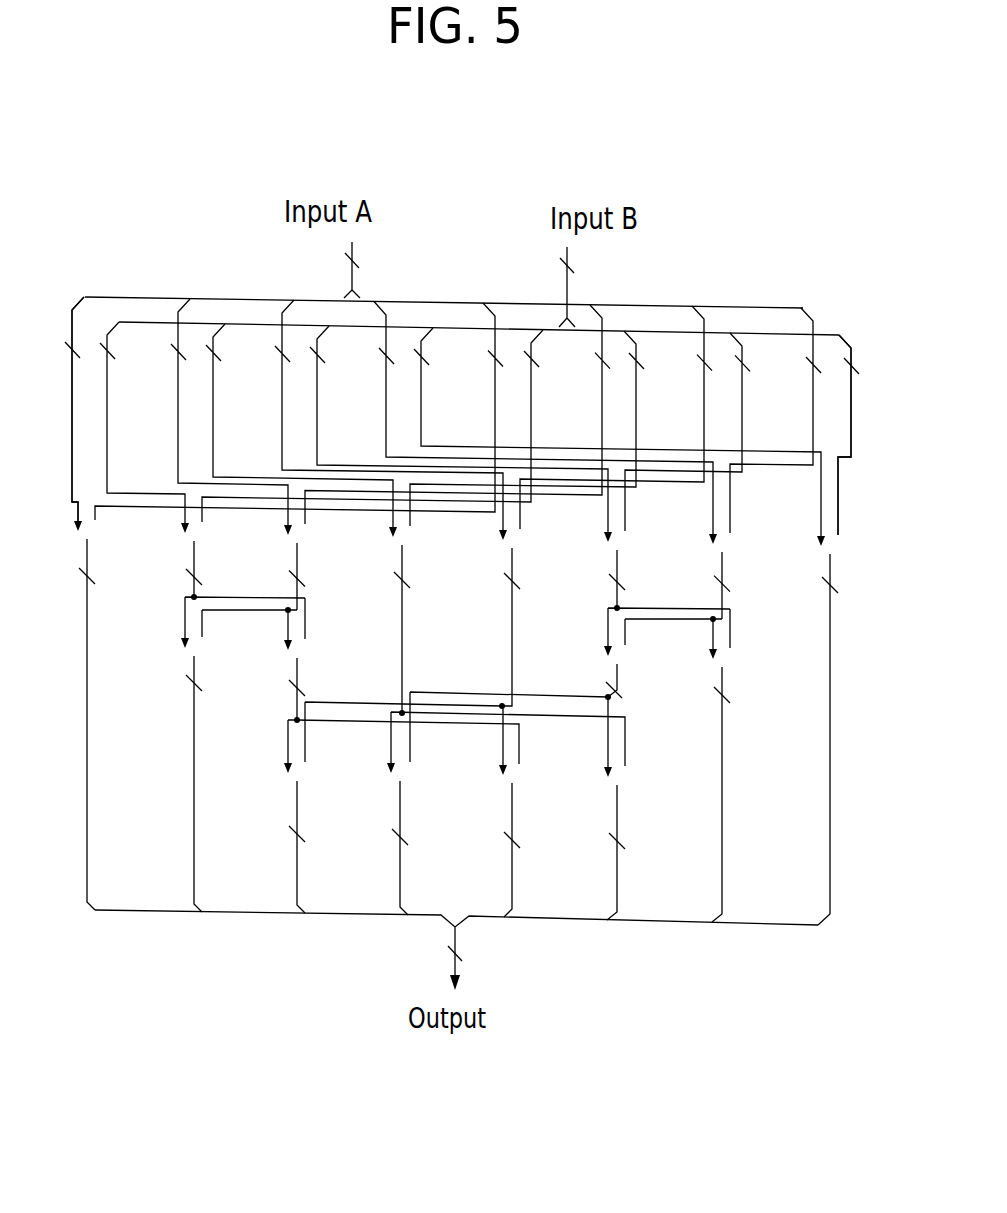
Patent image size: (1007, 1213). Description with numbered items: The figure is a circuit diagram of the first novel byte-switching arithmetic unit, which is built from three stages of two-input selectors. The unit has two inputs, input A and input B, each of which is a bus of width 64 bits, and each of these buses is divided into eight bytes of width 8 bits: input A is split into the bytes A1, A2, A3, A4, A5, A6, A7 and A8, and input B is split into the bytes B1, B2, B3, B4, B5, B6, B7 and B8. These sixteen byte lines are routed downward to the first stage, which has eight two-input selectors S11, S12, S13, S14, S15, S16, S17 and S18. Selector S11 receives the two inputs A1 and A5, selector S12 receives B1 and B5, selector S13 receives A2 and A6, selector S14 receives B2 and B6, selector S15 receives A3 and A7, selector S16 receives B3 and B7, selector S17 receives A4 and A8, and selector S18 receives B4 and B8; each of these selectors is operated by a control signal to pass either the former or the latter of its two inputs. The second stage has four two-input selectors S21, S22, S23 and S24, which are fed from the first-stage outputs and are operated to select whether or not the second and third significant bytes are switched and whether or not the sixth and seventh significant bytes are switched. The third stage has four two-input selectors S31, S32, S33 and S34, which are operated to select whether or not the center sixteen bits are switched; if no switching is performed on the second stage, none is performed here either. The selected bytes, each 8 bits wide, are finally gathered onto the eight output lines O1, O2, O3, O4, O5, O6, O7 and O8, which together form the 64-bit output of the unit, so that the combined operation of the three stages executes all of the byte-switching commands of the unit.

The 64-bit input 64 is at (462, 616).
The 8-bit byte 8 is at (468, 574).
The 8-bit input A1 is at (62, 409).
The 8-bit input A2 is at (214, 412).
The 8-bit input A3 is at (374, 415).
The 8-bit input A4 is at (530, 418).
The 8-bit input A5 is at (299, 411).
The 8-bit input A6 is at (457, 414).
The 8-bit input A7 is at (616, 417).
The 8-bit input A8 is at (775, 420).
The 8-bit input B1 is at (142, 422).
The 8-bit input B2 is at (299, 425).
The 8-bit input B3 is at (459, 429).
The 8-bit input B4 is at (617, 432).
The 8-bit input B5 is at (382, 426).
The 8-bit input B6 is at (539, 428).
The 8-bit input B7 is at (700, 432).
The 8-bit input B8 is at (860, 435).
The output byte 1 line O1 is at (104, 724).
The output byte 2 line O2 is at (211, 784).
The output byte 3 line O3 is at (314, 847).
The output byte 4 line O4 is at (418, 848).
The output byte 5 line O5 is at (524, 850).
The output byte 6 line O6 is at (628, 852).
The output byte 7 line O7 is at (734, 794).
The output byte 8 line O8 is at (841, 739).
The two-input selector S11 is at (64, 551).
The two-input selector S12 is at (172, 552).
The two-input selector S13 is at (273, 554).
The two-input selector S14 is at (378, 556).
The two-input selector S15 is at (487, 558).
The two-input selector S16 is at (594, 559).
The two-input selector S17 is at (696, 561).
The two-input selector S18 is at (803, 563).
The two-input selector S21 is at (167, 671).
The two-input selector S22 is at (273, 674).
The two-input selector S23 is at (594, 658).
The two-input selector S24 is at (695, 685).
The two-input selector S31 is at (267, 790).
The two-input selector S32 is at (374, 790).
The two-input selector S33 is at (486, 794).
The two-input selector S34 is at (591, 796).